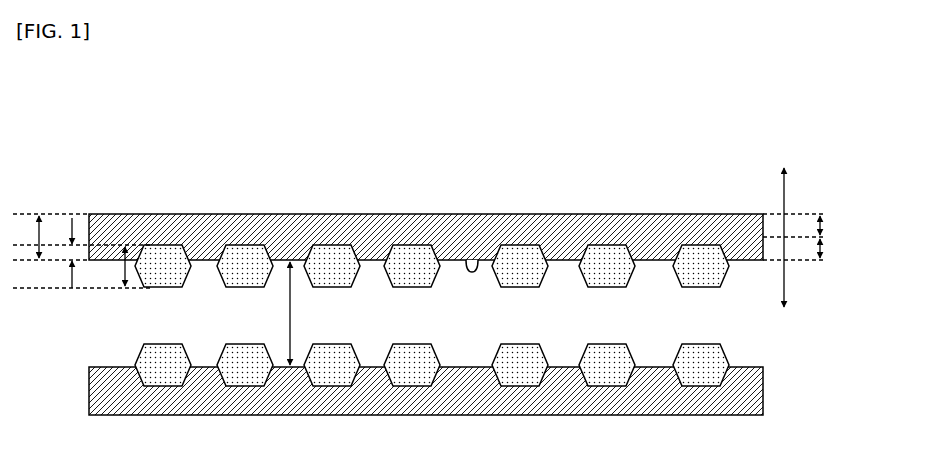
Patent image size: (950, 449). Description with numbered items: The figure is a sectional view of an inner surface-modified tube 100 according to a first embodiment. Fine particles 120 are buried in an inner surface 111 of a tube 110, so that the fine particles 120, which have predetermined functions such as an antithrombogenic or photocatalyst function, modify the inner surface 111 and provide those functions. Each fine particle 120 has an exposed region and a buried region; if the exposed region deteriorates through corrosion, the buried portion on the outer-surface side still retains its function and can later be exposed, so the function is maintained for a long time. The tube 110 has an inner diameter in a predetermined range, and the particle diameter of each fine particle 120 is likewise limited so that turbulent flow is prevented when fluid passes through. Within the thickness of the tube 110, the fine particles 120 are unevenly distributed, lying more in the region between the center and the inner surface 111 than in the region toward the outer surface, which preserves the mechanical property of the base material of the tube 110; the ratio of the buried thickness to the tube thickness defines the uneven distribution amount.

The inner surface-modified tube 100 is at (412, 110).
The tube 110 is at (595, 213).
The inner surface 111 is at (483, 256).
The fine particles 120 is at (245, 262).